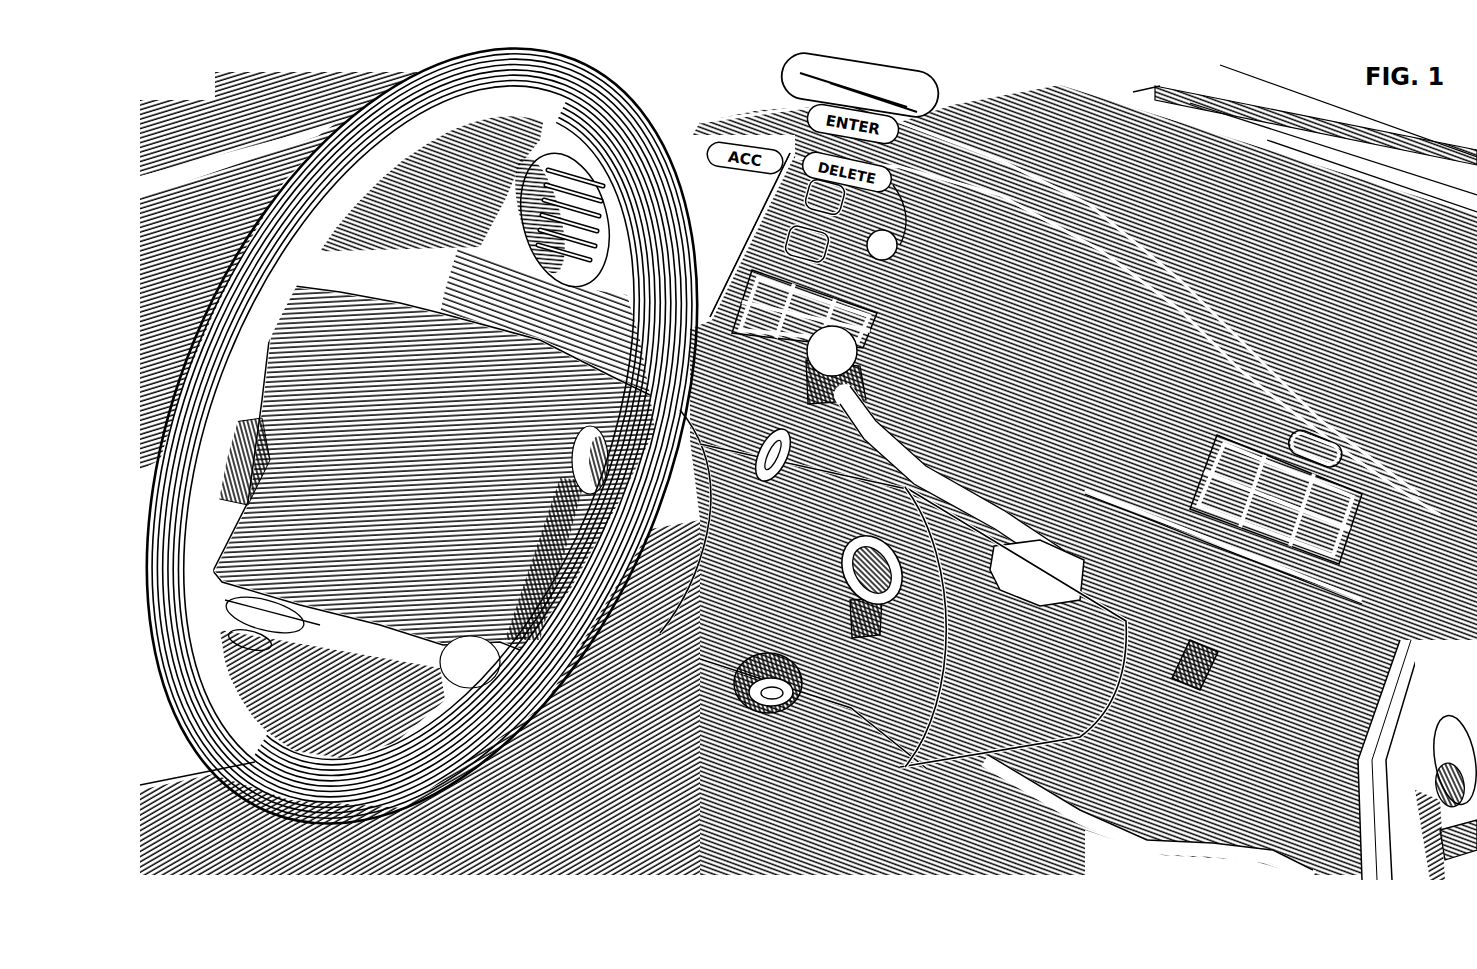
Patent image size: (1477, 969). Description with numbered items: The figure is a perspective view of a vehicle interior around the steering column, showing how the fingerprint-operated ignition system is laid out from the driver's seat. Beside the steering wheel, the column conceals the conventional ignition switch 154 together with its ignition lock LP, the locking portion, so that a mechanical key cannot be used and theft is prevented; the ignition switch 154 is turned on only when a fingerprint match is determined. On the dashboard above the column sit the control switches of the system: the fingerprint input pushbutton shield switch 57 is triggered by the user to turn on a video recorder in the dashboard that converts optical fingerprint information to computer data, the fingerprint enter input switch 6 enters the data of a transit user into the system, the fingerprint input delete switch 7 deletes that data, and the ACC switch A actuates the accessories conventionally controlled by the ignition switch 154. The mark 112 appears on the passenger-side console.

The fingerprint enter input switch 6 is at (827, 85).
The fingerprint input pushbutton shield switch 57 is at (911, 84).
The fingerprint input delete switch 7 is at (882, 245).
The ACC switch A is at (750, 235).
The ignition lock LP is at (835, 645).
The ignition switch 154 is at (1013, 639).
The console 112 is at (1409, 760).